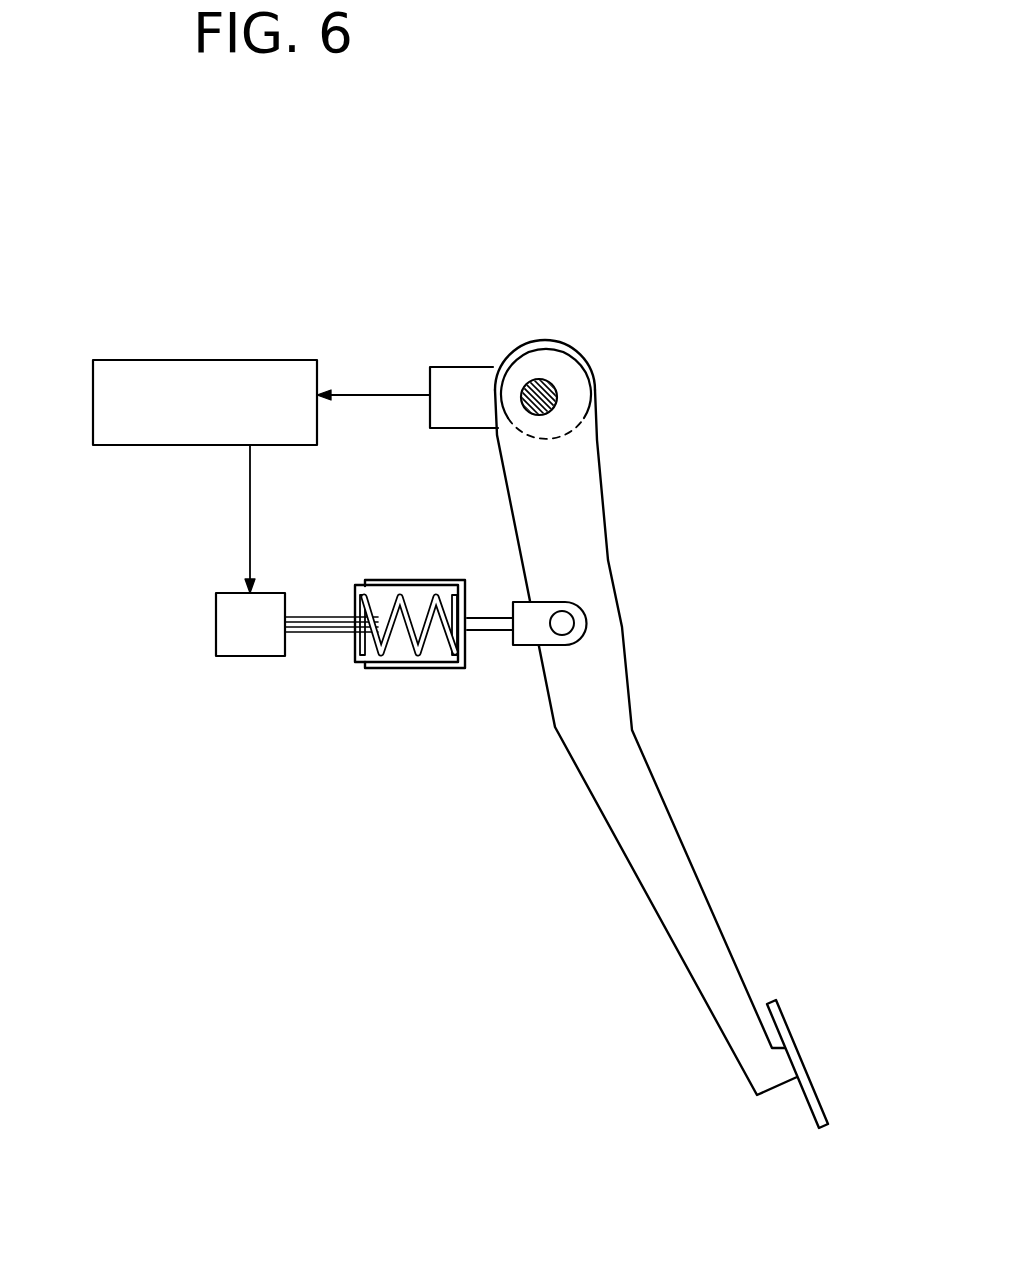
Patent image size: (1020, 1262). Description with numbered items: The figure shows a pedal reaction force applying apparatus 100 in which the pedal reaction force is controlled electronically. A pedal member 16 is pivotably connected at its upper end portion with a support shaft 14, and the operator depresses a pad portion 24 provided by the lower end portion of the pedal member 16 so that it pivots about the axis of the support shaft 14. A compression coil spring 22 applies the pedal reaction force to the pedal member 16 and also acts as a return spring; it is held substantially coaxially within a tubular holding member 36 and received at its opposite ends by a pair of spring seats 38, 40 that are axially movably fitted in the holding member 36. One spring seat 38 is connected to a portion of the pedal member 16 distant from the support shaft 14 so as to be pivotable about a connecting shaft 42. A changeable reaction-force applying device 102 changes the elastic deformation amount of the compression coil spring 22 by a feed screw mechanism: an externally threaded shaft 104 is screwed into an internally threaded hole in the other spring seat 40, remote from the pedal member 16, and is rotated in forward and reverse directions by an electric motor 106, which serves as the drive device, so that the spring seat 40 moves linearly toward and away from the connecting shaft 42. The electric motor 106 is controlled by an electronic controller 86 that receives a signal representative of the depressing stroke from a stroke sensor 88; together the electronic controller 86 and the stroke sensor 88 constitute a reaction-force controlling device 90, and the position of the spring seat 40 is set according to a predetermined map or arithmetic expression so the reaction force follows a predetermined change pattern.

The support shaft 14 is at (548, 394).
The pedal member 16 is at (640, 800).
The compression coil spring 22 is at (437, 640).
The pad portion 24 is at (790, 1068).
The tubular holding member 36 is at (395, 664).
The spring seat 38 is at (468, 661).
The spring seat 40 is at (353, 656).
The connecting shaft 42 is at (562, 623).
The electronic controller 86 is at (293, 372).
The stroke sensor 88 is at (453, 387).
The reaction-force controlling device 90 is at (133, 287).
The pedal reaction force applying apparatus 100 is at (677, 281).
The changeable reaction-force applying device 102 is at (262, 703).
The externally threaded shaft 104 is at (320, 622).
The electric motor 106 is at (228, 618).